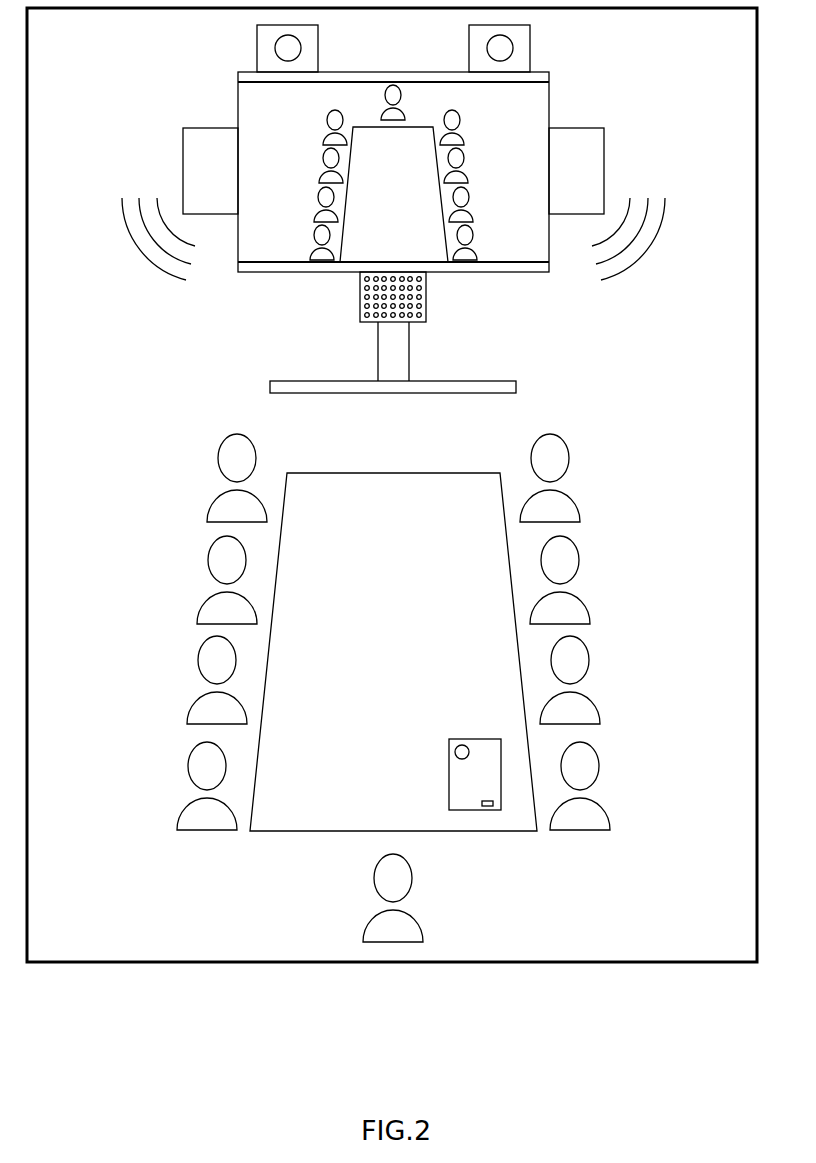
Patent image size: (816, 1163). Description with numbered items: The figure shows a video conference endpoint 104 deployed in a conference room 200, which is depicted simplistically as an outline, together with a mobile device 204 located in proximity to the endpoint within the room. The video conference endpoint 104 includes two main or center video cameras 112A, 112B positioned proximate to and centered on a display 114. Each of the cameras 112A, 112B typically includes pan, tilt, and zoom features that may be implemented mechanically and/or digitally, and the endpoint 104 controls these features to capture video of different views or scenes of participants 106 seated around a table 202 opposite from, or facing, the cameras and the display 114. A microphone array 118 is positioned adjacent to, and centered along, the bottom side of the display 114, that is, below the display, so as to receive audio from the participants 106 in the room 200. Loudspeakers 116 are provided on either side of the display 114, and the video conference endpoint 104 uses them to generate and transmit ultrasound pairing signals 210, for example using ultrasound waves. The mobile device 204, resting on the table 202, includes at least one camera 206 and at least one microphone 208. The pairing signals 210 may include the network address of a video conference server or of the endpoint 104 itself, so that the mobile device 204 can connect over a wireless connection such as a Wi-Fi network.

The video conference endpoint 104 is at (186, 81).
The participants 106 is at (180, 543).
The main video camera 112A is at (257, 50).
The main video camera 112B is at (530, 50).
The display 114 is at (549, 118).
The loudspeakers 116 is at (183, 172).
The microphone array 118 is at (426, 295).
The conference room 200 is at (649, 55).
The table 202 is at (378, 668).
The mobile device 204 is at (474, 739).
The camera 206 is at (455, 752).
The microphone 208 is at (487, 807).
The ultrasound pairing signals 210 is at (150, 262).